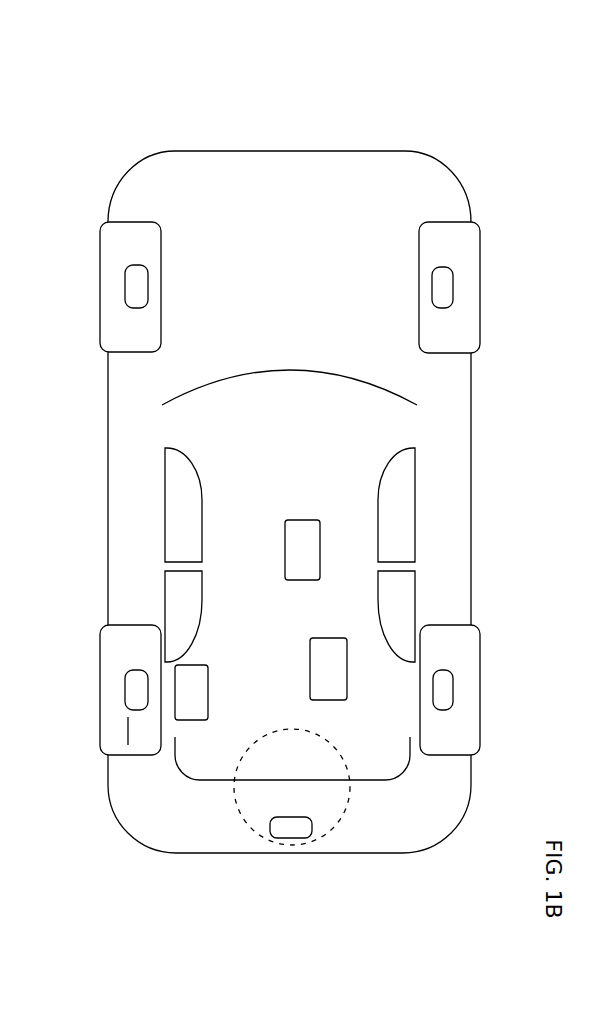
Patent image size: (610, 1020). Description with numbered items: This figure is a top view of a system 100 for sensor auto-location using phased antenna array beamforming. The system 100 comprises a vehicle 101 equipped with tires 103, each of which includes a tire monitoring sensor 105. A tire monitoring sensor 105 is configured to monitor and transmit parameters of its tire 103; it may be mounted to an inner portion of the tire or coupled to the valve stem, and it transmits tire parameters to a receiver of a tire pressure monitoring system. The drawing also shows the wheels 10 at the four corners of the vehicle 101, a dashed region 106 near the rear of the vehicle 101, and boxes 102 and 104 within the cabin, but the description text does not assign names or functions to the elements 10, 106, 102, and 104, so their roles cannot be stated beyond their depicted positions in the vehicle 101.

The system 100 is at (434, 95).
The vehicle 101 is at (311, 150).
The wheel 10 is at (118, 263).
The tire monitoring sensor 105 is at (130, 308).
The sensing range 106 is at (327, 835).
The controller 102 is at (182, 677).
The tire 103 is at (289, 536).
The communication module 104 is at (322, 647).